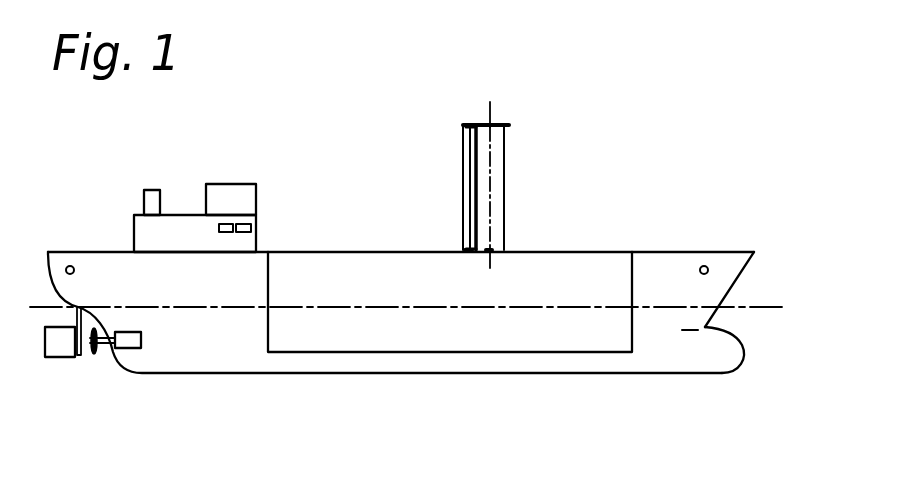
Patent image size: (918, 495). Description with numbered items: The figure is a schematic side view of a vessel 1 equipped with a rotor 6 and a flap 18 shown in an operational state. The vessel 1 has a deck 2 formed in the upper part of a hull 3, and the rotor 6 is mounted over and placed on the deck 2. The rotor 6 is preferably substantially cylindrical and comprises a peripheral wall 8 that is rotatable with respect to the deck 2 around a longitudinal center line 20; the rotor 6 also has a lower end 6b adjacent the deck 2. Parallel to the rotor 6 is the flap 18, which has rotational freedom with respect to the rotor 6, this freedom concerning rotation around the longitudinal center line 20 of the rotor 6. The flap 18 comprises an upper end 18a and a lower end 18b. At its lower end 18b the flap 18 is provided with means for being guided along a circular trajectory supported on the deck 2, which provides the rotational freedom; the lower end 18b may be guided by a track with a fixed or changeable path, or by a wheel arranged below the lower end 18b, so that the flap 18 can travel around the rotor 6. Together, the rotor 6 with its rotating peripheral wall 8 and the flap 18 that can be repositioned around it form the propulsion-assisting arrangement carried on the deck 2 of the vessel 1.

The vessel 1 is at (633, 175).
The deck 2 is at (659, 252).
The hull 3 is at (726, 352).
The rotor 6 is at (499, 168).
The lower end 6b is at (506, 124).
The peripheral wall 8 is at (505, 192).
The flap 18 is at (470, 177).
The upper end 18a is at (465, 127).
The lower end 18b is at (465, 249).
The longitudinal center line 20 is at (490, 105).